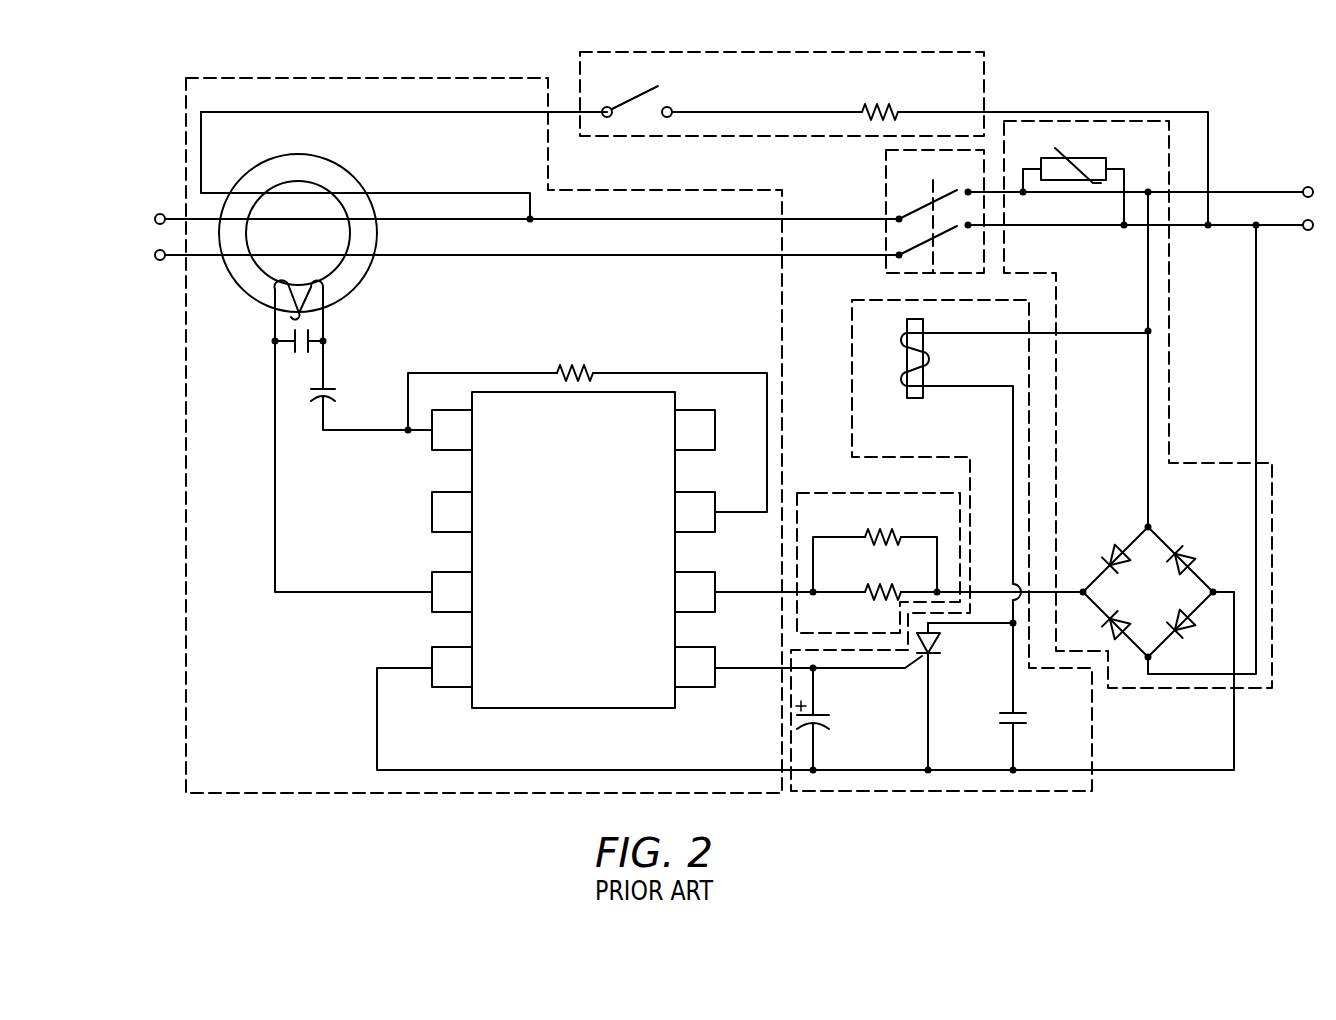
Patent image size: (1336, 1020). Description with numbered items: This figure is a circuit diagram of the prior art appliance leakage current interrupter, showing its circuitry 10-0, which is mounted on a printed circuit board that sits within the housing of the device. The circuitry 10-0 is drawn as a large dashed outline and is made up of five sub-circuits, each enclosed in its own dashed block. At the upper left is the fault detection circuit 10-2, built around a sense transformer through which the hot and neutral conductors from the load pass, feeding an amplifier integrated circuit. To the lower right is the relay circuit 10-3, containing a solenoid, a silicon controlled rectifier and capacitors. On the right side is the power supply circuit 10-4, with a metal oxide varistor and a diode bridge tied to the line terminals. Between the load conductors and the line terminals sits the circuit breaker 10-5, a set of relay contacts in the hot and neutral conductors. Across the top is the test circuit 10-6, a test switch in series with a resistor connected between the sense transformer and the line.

The circuitry 10-0 is at (286, 811).
The fault detection circuit 10-2 is at (352, 76).
The relay circuit 10-3 is at (1095, 738).
The power supply circuit 10-4 is at (1170, 347).
The circuit breaker 10-5 is at (885, 178).
The test circuit 10-6 is at (985, 62).